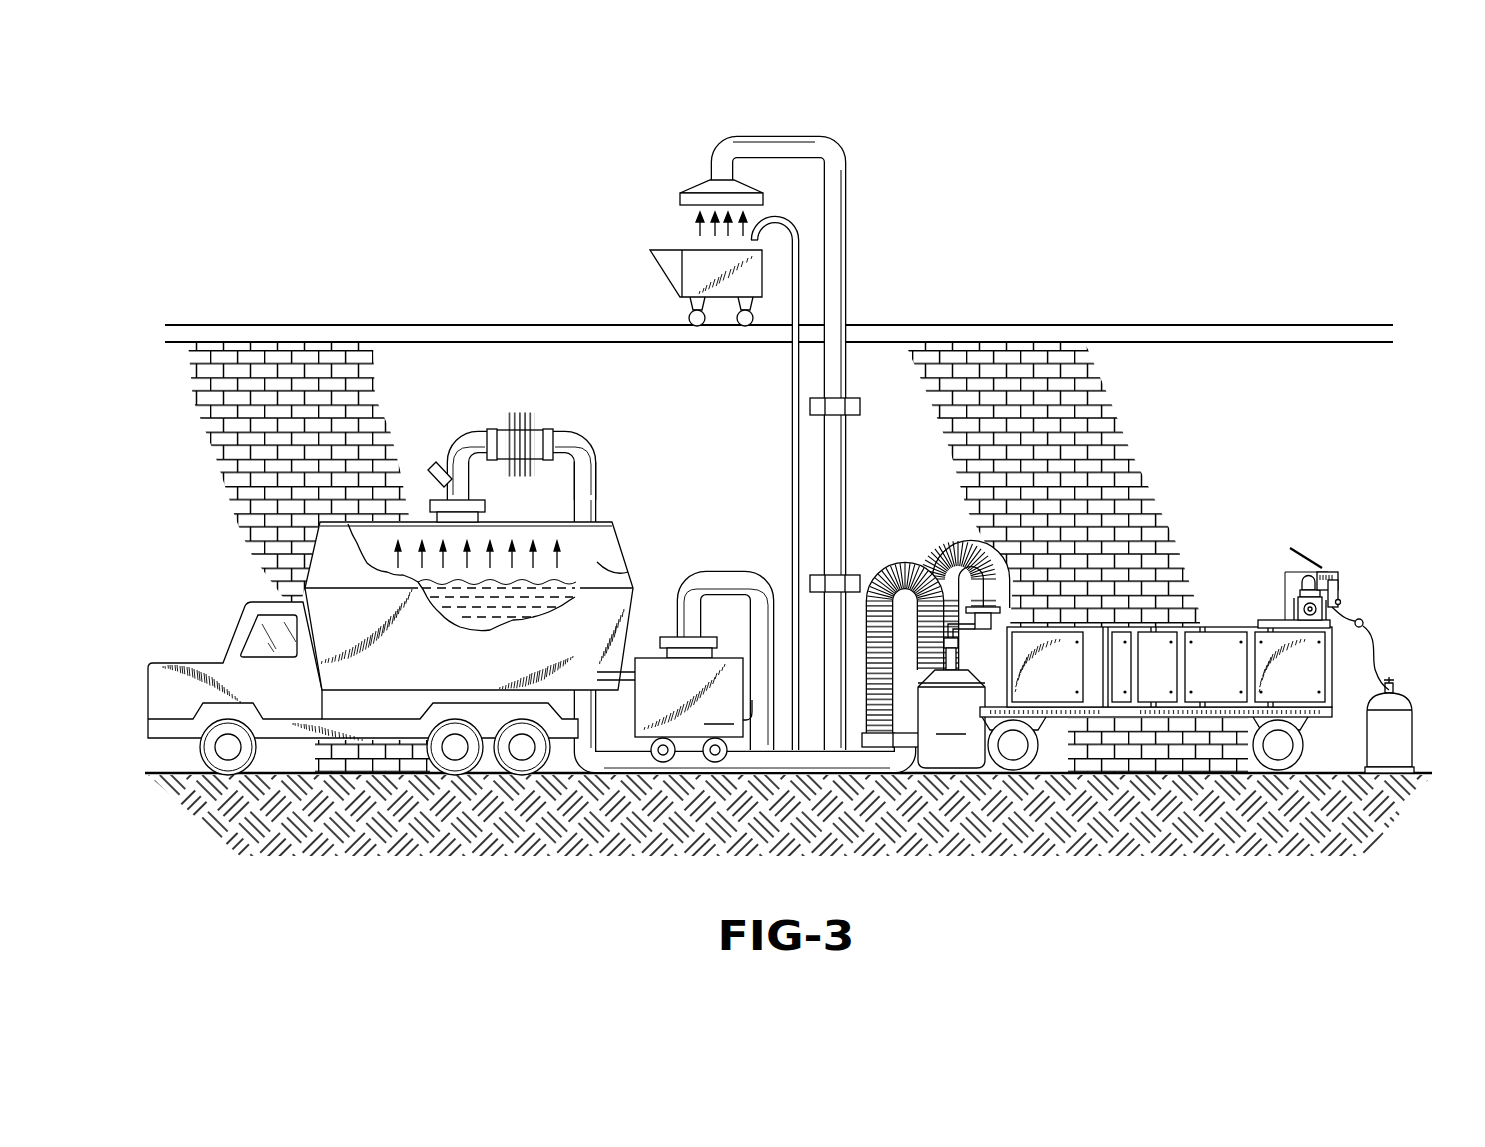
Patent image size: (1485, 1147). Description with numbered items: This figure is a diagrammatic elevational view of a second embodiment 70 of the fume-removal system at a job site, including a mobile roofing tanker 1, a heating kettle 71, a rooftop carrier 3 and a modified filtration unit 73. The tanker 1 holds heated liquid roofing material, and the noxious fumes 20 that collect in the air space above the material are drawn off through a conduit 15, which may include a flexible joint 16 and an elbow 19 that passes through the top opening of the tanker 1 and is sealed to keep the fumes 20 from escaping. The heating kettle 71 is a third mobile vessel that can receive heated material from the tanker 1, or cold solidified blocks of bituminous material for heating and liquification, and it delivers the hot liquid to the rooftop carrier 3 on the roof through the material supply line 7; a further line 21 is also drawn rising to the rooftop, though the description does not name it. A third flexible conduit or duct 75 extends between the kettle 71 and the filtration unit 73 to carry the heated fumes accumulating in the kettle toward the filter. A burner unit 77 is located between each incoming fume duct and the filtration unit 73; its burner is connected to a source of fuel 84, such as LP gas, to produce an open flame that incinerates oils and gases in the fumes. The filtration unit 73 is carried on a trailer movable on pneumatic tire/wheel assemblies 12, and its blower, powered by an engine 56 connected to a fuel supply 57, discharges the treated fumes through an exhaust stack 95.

The mobile roofing tanker 1 is at (240, 631).
The rooftop carrier 3 is at (664, 272).
The material supply line 7 is at (793, 452).
The pneumatic tire/wheel assemblies 12 is at (1278, 760).
The conduit 15 is at (675, 774).
The flexible joint 16 is at (523, 436).
The elbow 19 is at (467, 446).
The noxious fumes 20 is at (558, 563).
The vent pipe 21 is at (846, 215).
The engine 56 is at (1335, 576).
The fuel supply 57 is at (1412, 730).
The second embodiment of the filtration system 70 is at (1172, 490).
The heating kettle 71 is at (689, 699).
The modified filtration unit 73 is at (1212, 630).
The third flexible conduit or duct 75 is at (726, 580).
The burner unit 77 is at (996, 620).
The source of fuel 84 is at (951, 696).
The exhaust stack 95 is at (1290, 578).